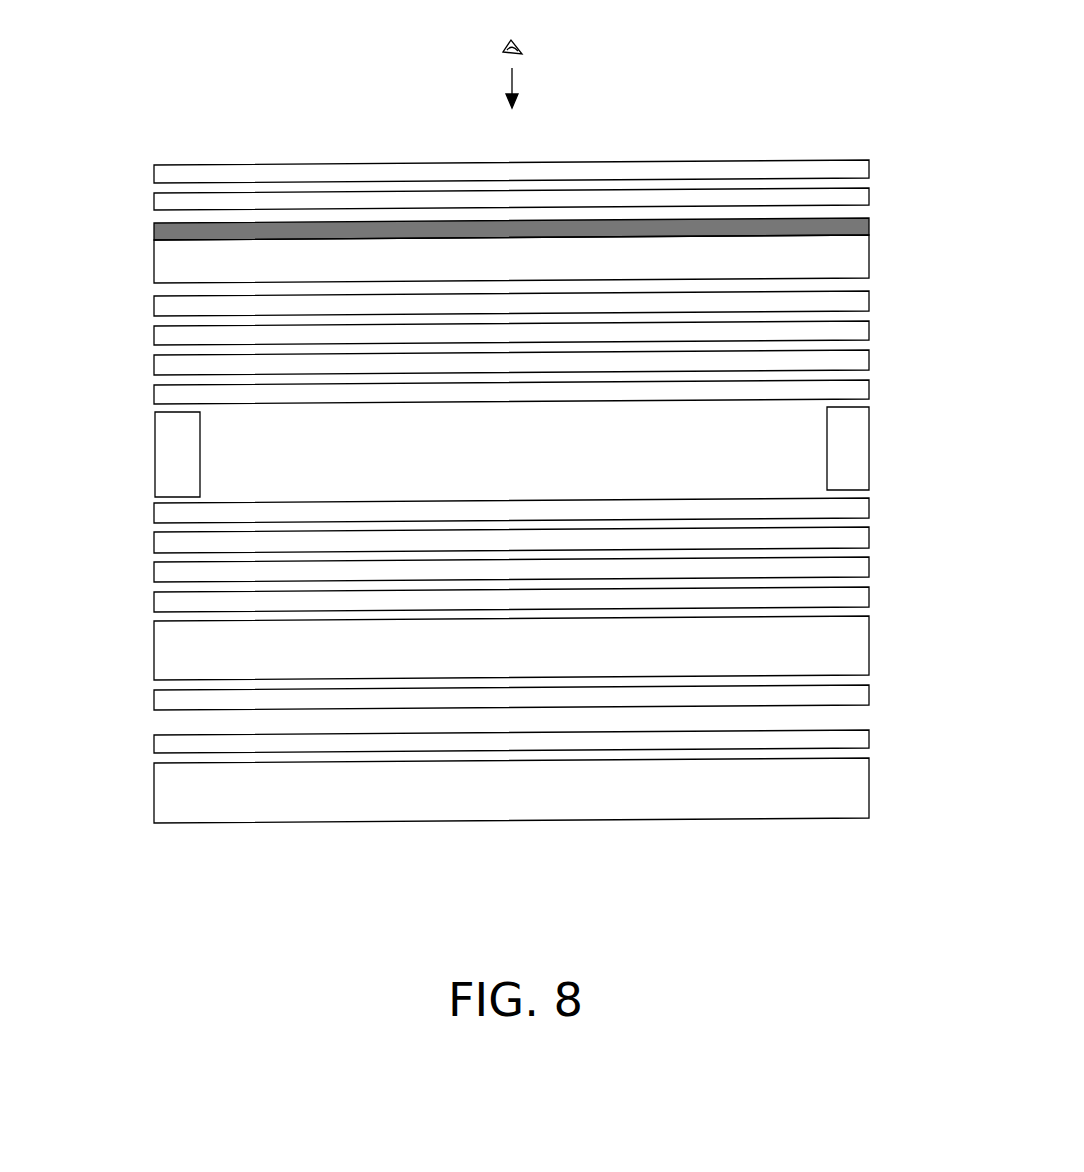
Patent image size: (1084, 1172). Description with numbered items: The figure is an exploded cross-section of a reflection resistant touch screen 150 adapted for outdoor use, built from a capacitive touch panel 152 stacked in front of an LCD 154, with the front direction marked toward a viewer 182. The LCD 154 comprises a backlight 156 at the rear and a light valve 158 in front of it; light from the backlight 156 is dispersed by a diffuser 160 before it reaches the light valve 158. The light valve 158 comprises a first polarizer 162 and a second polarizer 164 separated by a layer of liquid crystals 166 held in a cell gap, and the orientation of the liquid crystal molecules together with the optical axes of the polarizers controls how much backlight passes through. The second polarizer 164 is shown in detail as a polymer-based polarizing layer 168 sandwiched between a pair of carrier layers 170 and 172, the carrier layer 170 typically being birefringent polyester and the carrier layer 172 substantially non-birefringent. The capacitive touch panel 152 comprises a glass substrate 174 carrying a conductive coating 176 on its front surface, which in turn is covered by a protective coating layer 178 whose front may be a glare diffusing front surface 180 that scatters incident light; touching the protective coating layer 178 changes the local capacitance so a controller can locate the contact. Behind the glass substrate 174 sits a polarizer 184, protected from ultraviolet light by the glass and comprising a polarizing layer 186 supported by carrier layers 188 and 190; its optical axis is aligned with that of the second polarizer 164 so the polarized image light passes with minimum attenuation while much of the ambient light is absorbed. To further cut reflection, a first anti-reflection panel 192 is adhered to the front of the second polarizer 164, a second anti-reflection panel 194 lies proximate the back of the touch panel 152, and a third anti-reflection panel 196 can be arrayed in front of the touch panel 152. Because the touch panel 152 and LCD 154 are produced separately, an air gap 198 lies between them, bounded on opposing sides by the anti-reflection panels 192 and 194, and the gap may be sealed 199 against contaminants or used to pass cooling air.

The touch screen 150 is at (126, 846).
The capacitive touch panel 152 is at (141, 195).
The LCD 154 is at (150, 503).
The backlight 156 is at (870, 787).
The light valve 158 is at (130, 533).
The diffuser 160 is at (870, 738).
The first polarizer 162 is at (870, 697).
The second polarizer 164 is at (110, 533).
The liquid crystals 166 is at (870, 645).
The polarizing layer 168 is at (870, 567).
The carrier layer 170 is at (870, 537).
The carrier layer 172 is at (870, 597).
The glass substrate 174 is at (870, 258).
The conductive coating 176 is at (870, 226).
The protective coating layer 178 is at (870, 196).
The glare diffusing front surface 180 is at (835, 190).
The viewer 182 is at (518, 45).
The polarizer 184 is at (141, 298).
The polarizing layer 186 is at (870, 332).
The carrier layer 188 is at (870, 362).
The carrier layer 190 is at (870, 303).
The first anti-reflection panel 192 is at (870, 508).
The second anti-reflection panel 194 is at (870, 392).
The third anti-reflection panel 196 is at (870, 170).
The air gap 198 is at (783, 428).
The seal 199 is at (870, 457).